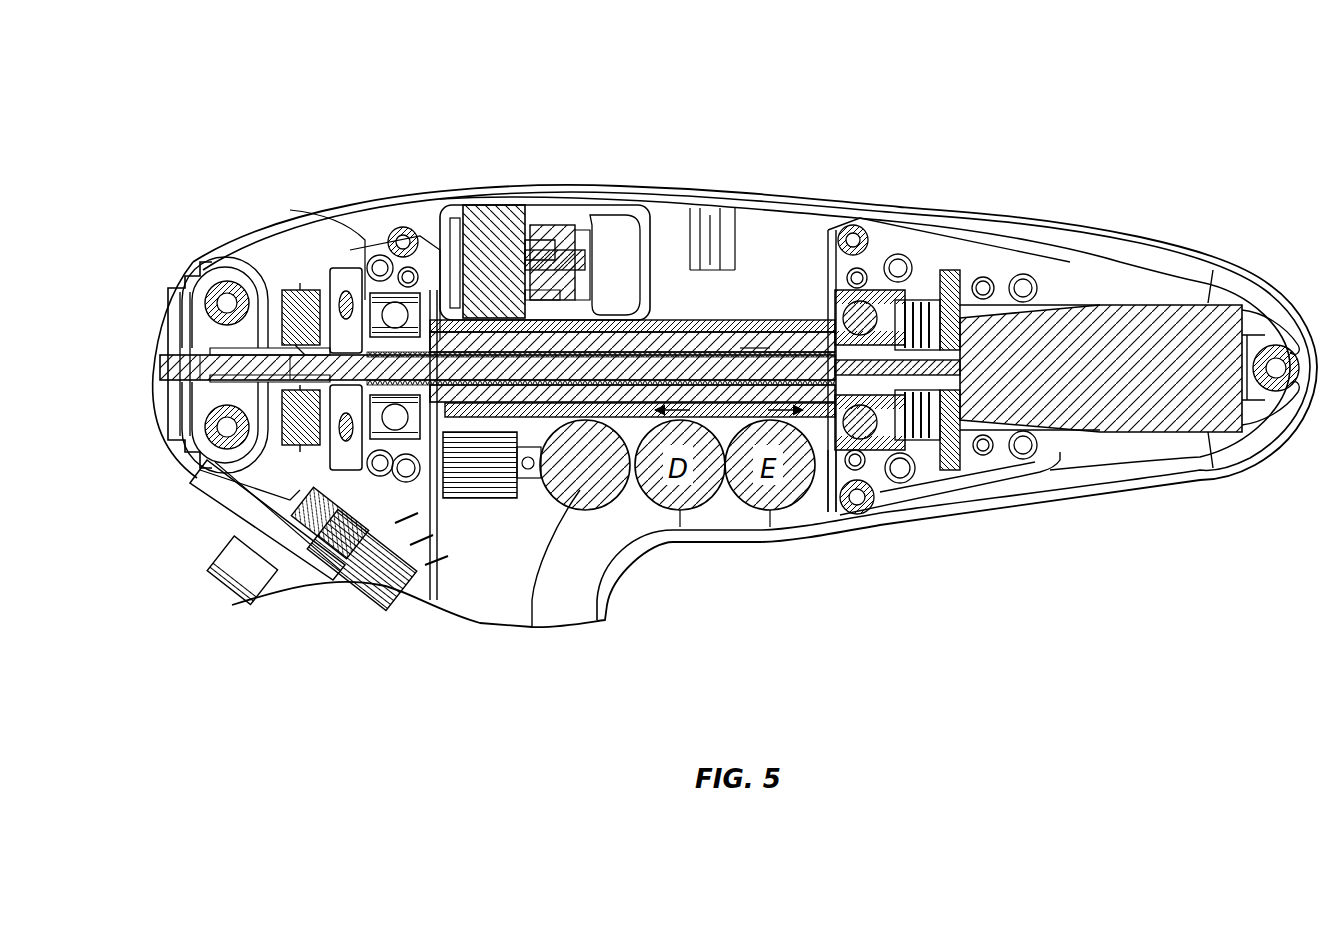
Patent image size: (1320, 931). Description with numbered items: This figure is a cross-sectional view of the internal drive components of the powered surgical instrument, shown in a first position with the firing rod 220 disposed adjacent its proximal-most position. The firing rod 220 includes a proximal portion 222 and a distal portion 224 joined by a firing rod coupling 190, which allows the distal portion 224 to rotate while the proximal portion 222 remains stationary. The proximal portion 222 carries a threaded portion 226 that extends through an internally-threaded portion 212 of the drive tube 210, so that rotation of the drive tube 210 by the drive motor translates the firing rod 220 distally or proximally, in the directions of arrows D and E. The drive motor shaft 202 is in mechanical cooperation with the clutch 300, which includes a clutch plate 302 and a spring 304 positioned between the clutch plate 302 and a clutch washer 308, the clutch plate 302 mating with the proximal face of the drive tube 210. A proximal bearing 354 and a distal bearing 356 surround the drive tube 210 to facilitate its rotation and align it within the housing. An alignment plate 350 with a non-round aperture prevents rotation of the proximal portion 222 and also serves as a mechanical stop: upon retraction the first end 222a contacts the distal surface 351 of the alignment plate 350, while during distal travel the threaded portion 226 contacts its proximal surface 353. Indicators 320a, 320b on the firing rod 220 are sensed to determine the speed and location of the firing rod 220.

The firing rod coupling 190 is at (200, 262).
The drive motor shaft 202 is at (927, 467).
The drive tube 210 is at (452, 340).
The internally-threaded portion 212 is at (520, 347).
The firing rod 220 is at (623, 393).
The proximal portion 222 is at (550, 372).
The first end 222a is at (305, 440).
The distal portion 224 is at (185, 368).
The threaded portion 226 is at (833, 325).
The clutch 300 is at (1020, 320).
The clutch plate 302 is at (935, 312).
The spring 304 is at (952, 330).
The clutch washer 308 is at (1095, 302).
The indicator 320a is at (248, 515).
The indicator 320b is at (755, 350).
The alignment plate 350 is at (300, 290).
The distal surface 351 is at (280, 300).
The proximal surface 353 is at (340, 270).
The proximal bearing 354 is at (870, 300).
The distal bearing 356 is at (390, 225).